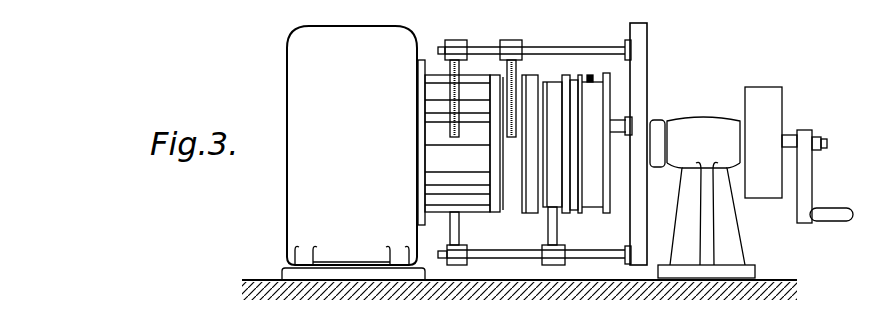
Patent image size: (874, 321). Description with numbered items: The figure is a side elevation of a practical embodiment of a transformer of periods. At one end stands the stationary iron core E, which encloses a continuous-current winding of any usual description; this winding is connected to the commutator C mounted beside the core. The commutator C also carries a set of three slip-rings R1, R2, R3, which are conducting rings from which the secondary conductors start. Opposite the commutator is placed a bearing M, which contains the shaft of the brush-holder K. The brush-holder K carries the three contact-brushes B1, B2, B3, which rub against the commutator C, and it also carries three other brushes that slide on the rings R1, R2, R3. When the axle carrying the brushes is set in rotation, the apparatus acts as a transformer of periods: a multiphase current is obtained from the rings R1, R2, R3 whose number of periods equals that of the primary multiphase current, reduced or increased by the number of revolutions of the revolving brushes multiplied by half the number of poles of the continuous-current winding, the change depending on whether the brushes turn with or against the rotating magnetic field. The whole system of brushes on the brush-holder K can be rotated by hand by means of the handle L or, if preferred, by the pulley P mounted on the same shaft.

The stationary iron core E is at (353, 153).
The commutator C is at (464, 143).
The contact-brush B1 is at (594, 47).
The contact-brush B2 is at (528, 252).
The contact-brush B3 is at (612, 127).
The slip-ring R1 is at (513, 197).
The slip-ring R2 is at (553, 197).
The slip-ring R3 is at (593, 197).
The brush-holder K is at (641, 208).
The bearing M is at (702, 197).
The pulley P is at (763, 142).
The handle L is at (815, 182).